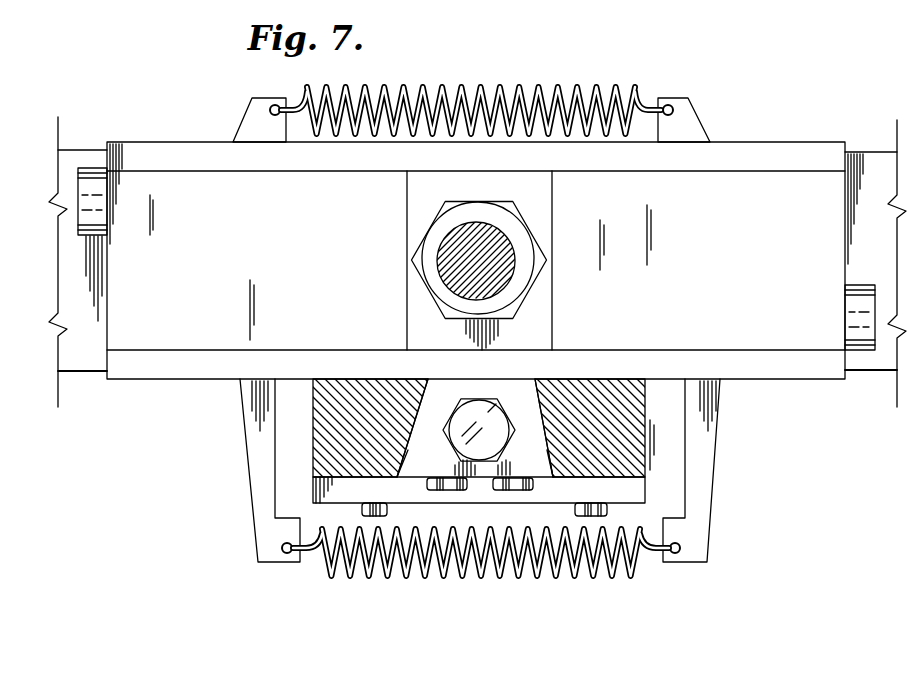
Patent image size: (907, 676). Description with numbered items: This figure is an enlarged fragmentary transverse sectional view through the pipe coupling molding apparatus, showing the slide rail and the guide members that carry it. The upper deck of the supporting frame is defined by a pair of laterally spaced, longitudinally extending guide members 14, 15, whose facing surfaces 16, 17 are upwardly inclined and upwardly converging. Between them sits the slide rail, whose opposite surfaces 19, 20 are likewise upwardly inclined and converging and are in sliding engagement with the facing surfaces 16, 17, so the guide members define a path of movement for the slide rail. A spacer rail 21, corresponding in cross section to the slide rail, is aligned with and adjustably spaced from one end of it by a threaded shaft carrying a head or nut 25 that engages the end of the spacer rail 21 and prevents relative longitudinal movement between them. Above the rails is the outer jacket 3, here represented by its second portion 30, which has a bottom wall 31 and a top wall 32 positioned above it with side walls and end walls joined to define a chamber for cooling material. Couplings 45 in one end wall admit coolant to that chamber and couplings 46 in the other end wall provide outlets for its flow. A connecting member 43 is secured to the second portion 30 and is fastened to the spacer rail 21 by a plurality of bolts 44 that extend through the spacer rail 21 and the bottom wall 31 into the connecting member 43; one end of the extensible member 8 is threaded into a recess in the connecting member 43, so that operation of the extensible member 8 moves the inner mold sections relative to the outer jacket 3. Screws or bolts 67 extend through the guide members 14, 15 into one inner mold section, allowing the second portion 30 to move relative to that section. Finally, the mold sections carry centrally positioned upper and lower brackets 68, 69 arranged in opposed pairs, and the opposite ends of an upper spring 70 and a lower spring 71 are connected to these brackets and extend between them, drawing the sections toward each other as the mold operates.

The outer jacket 3 is at (740, 143).
The extensible member 8 is at (500, 237).
The guide member 14 is at (645, 437).
The guide member 15 is at (318, 425).
The facing surface 16 is at (529, 368).
The facing surface 17 is at (440, 370).
The opposite surface 19 is at (556, 465).
The opposite surface 20 is at (397, 470).
The spacer rail 21 is at (480, 491).
The head or nut 25 is at (458, 408).
The second portion 30 is at (148, 140).
The bottom wall 31 is at (343, 357).
The top wall 32 is at (217, 162).
The connecting member 43 is at (408, 205).
The bolts 44 is at (517, 490).
The couplings 45 is at (90, 168).
The couplings 46 is at (857, 290).
The screws or bolts 67 is at (380, 517).
The upper brackets 68 is at (257, 98).
The lower brackets 69 is at (255, 541).
The upper spring 70 is at (532, 100).
The lower spring 71 is at (448, 573).